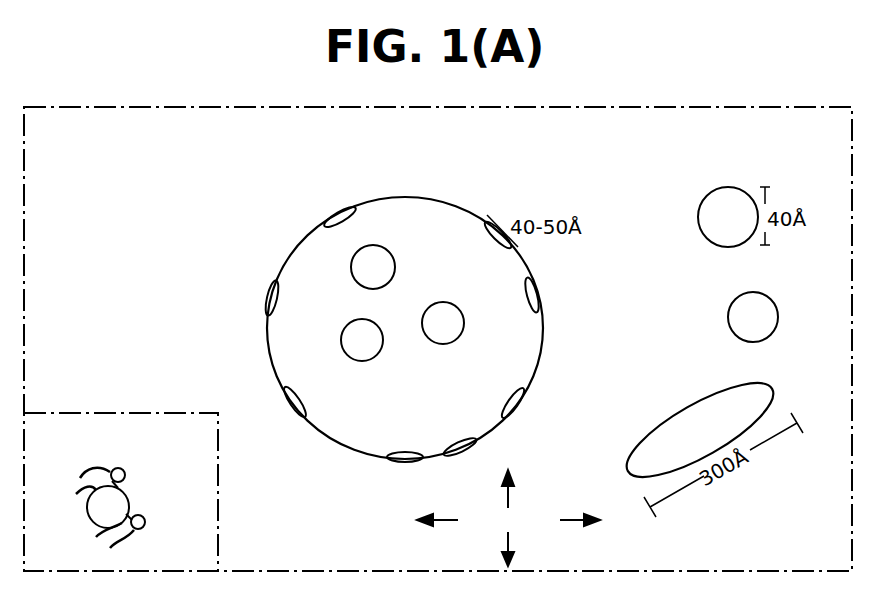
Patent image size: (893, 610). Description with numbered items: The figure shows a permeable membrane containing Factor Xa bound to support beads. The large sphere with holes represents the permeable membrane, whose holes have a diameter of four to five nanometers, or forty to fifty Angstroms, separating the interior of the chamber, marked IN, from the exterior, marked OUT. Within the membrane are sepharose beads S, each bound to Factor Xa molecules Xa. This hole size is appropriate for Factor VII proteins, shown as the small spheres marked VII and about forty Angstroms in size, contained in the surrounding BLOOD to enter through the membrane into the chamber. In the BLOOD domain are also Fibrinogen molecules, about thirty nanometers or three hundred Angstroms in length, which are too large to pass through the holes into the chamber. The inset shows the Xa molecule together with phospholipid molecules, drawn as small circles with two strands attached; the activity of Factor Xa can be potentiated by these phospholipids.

The sepharose bead S is at (275, 386).
The Factor Xa is at (284, 385).
The Factor VII is at (738, 264).
The inside of the membrane chamber IN is at (405, 328).
The outside of the membrane chamber OUT is at (569, 364).
The fibrinogen molecule Fibrinogen is at (700, 429).
The blood domain BLOOD is at (508, 518).